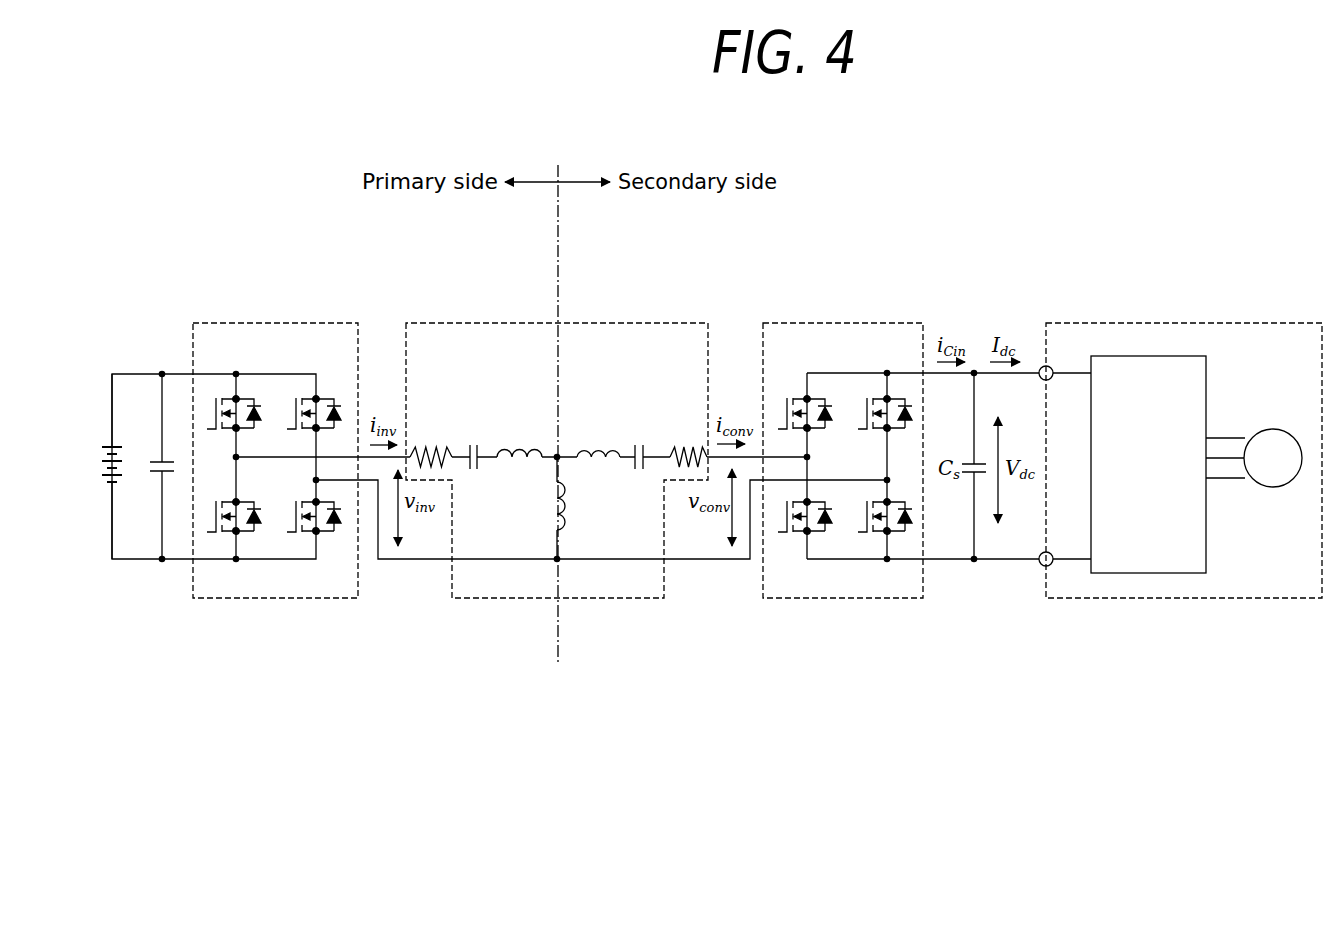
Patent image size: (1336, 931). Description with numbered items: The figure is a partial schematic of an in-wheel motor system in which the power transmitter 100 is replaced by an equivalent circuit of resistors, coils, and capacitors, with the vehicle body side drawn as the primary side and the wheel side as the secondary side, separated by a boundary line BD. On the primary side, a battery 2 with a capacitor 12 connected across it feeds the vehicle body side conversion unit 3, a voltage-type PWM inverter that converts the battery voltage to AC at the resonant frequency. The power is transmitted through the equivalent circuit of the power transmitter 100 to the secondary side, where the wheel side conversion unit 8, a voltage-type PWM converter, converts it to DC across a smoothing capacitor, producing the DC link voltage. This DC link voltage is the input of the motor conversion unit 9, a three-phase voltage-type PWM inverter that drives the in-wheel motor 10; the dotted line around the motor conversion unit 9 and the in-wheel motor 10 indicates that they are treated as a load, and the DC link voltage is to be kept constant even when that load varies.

The battery 2 is at (97, 474).
The capacitor 12 is at (152, 470).
The vehicle body side conversion unit 3 is at (277, 323).
The power transmitter 100 is at (668, 323).
The wheel side conversion unit 8 is at (843, 323).
The motor conversion unit 9 is at (1144, 356).
The in-wheel motor 10 is at (1266, 429).
The boundary between primary and secondary sides BD is at (562, 243).